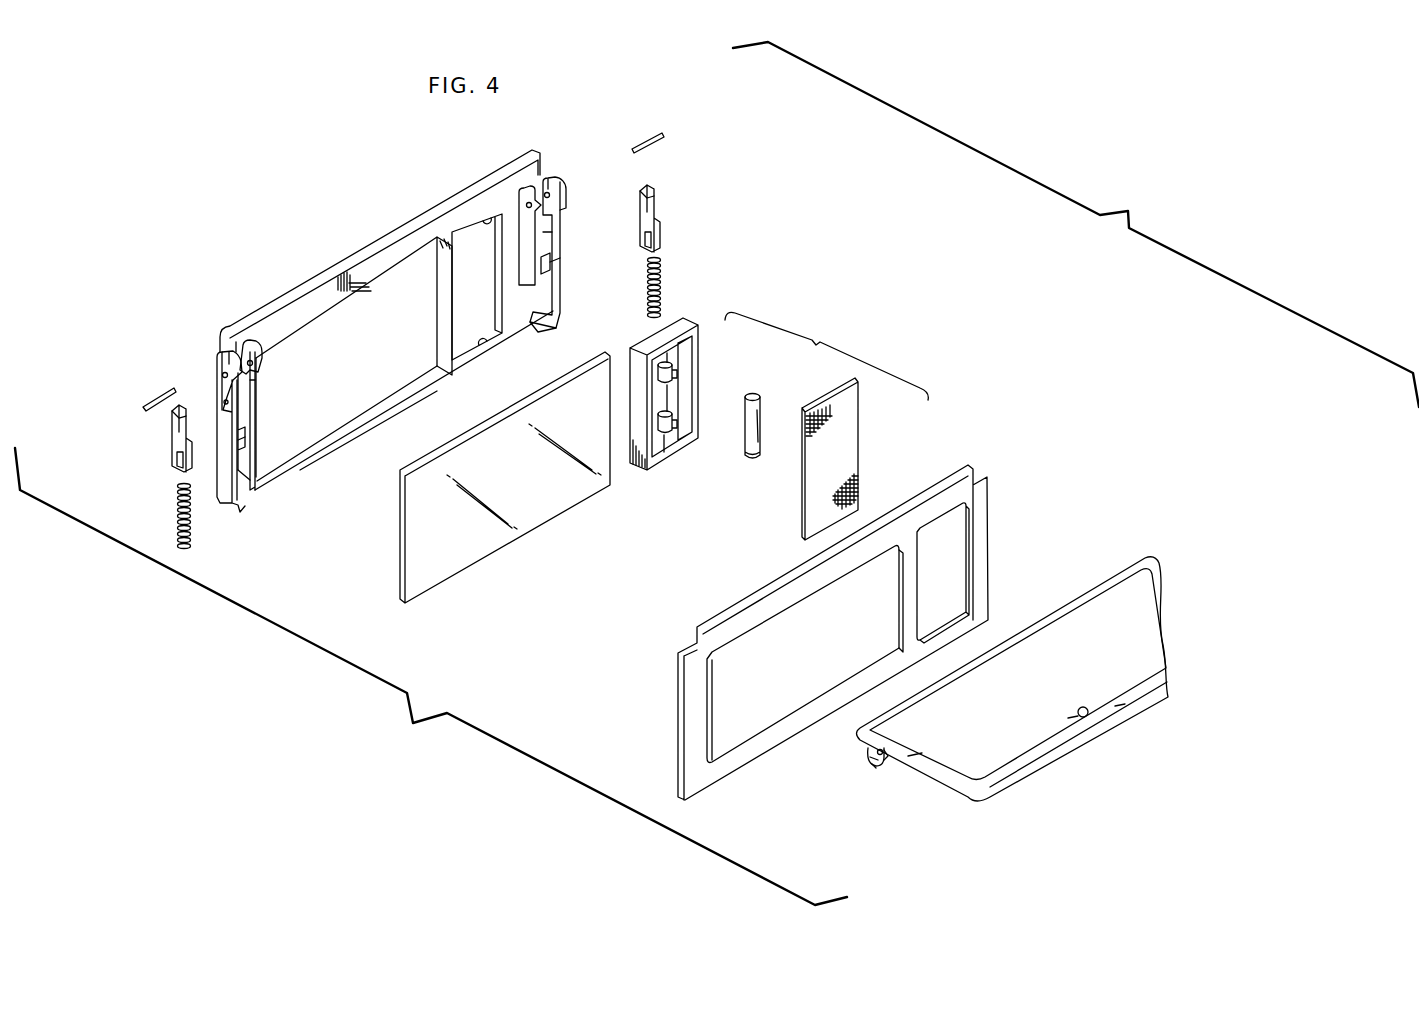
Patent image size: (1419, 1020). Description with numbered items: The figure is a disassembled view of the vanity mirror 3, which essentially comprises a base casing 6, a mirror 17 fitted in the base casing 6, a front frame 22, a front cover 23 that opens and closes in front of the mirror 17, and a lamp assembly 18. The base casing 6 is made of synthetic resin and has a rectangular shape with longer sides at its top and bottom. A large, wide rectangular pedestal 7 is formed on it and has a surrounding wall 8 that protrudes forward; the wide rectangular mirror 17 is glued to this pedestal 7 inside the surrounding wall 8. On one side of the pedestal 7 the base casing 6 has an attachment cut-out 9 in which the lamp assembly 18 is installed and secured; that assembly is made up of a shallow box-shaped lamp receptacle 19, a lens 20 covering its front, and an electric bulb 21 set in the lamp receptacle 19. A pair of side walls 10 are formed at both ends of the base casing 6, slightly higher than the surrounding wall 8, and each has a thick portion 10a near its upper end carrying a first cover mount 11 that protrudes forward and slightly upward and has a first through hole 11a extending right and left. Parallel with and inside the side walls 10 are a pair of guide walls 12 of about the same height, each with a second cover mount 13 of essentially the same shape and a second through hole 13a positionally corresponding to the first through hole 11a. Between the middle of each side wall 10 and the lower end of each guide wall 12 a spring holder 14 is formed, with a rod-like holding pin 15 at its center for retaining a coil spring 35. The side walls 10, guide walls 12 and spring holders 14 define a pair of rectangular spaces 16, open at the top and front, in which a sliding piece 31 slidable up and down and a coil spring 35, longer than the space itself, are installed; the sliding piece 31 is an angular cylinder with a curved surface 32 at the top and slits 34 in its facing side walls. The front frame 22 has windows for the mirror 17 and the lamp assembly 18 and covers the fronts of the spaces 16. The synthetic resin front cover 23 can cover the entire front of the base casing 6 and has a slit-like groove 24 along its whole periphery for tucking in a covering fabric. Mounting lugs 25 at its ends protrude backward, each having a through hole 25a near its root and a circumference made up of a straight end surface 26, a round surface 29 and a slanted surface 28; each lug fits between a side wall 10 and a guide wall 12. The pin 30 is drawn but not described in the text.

The vanity mirror 3 is at (847, 200).
The base casing 6 is at (352, 246).
The pedestal 7 is at (335, 408).
The surrounding wall 8 is at (381, 406).
The attachment cut-out 9 is at (484, 342).
The side wall 10 is at (559, 297).
The thick portion 10a is at (561, 214).
The first cover mount 11 is at (563, 184).
The first through hole 11a is at (549, 180).
The guide wall 12 is at (527, 240).
The second cover mount 13 is at (521, 198).
The second through hole 13a is at (527, 207).
The spring holder 14 is at (540, 300).
The holding pin 15 is at (551, 265).
The rectangular space 16 is at (545, 240).
The mirror 17 is at (540, 512).
The lamp assembly 18 is at (826, 356).
The lamp receptacle 19 is at (698, 350).
The lens 20 is at (860, 411).
The electric bulb 21 is at (752, 393).
The front frame 22 is at (680, 678).
The front cover 23 is at (1090, 579).
The slit-like groove 24 is at (1087, 715).
The mounting lug 25 is at (873, 765).
The through hole 25a is at (869, 751).
The straight end surface 26 is at (866, 758).
The slanted surface 28 is at (885, 762).
The round surface 29 is at (872, 765).
The pin 30 is at (666, 143).
The sliding piece 31 is at (663, 216).
The curved surface 32 is at (660, 193).
The slit 34 is at (656, 230).
The coil spring 35 is at (662, 279).